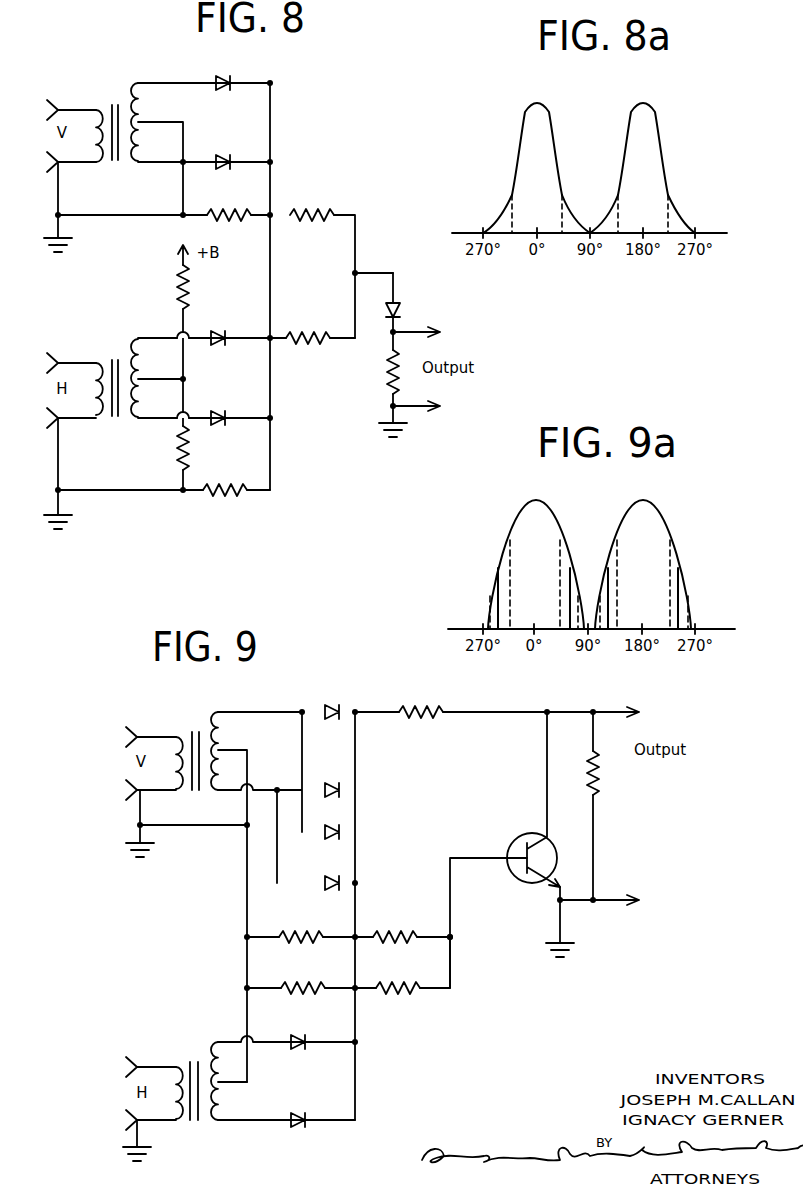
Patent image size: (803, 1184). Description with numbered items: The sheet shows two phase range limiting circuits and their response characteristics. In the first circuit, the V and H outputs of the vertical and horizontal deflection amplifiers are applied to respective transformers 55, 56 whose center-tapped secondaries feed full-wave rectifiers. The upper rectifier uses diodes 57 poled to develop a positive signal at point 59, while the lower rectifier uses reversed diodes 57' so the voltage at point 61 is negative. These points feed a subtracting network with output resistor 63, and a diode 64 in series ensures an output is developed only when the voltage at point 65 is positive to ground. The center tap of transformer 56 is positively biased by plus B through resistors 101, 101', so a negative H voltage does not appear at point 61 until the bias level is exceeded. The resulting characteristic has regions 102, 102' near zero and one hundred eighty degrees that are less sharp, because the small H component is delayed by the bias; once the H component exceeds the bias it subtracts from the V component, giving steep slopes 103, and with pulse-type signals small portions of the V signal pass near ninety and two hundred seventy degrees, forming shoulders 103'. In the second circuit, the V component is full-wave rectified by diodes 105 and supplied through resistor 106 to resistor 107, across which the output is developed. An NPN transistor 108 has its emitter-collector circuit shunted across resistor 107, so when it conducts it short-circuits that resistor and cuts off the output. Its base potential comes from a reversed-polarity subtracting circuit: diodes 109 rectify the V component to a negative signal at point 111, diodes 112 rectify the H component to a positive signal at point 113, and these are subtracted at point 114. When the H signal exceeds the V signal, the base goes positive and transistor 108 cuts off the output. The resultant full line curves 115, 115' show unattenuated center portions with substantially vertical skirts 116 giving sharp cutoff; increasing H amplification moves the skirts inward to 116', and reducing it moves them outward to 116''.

In FIG. 8, the transformer 55 is at (117, 106).
In FIG. 8, the transformer 56 is at (116, 361).
In FIG. 8, the diodes 57 is at (229, 122).
In FIG. 8, the diodes 57' is at (225, 378).
In FIG. 8, the point 59 is at (273, 215).
In FIG. 8, the point 61 is at (272, 336).
In FIG. 8, the output resistor 63 is at (389, 370).
In FIG. 8, the diode 64 is at (402, 305).
In FIG. 8, the point 65 is at (353, 273).
In FIG. 8, the resistor 101 is at (162, 287).
In FIG. 8, the resistor 101' is at (152, 448).
In FIG. 8A, the region 102 is at (517, 135).
In FIG. 8A, the region 102' is at (660, 137).
In FIG. 8A, the steep slopes 103 is at (590, 179).
In FIG. 8A, the shoulders 103' is at (595, 202).
In FIG. 9, the diodes 105 is at (334, 782).
In FIG. 9, the resistor 106 is at (412, 718).
In FIG. 9, the resistor 107 is at (604, 776).
In FIG. 9, the transistor 108 is at (518, 836).
In FIG. 9, the diodes 109 is at (328, 848).
In FIG. 9, the point 111 is at (368, 934).
In FIG. 9, the diodes 112 is at (302, 1055).
In FIG. 9, the point 113 is at (358, 994).
In FIG. 9, the point 114 is at (454, 937).
In FIG. 9A, the full line curve 115 is at (516, 564).
In FIG. 9A, the full line curve 115' is at (630, 564).
In FIG. 9A, the skirts 116 is at (587, 597).
In FIG. 9A, the skirts 116' is at (590, 584).
In FIG. 9A, the skirts 116'' is at (592, 609).